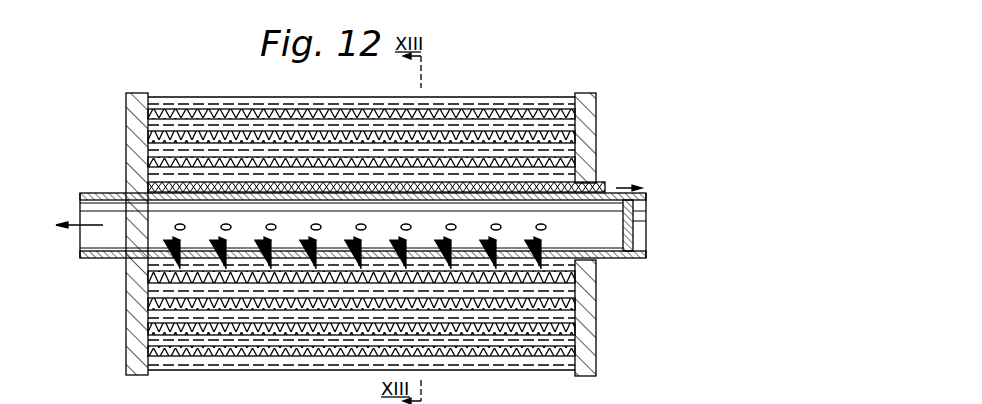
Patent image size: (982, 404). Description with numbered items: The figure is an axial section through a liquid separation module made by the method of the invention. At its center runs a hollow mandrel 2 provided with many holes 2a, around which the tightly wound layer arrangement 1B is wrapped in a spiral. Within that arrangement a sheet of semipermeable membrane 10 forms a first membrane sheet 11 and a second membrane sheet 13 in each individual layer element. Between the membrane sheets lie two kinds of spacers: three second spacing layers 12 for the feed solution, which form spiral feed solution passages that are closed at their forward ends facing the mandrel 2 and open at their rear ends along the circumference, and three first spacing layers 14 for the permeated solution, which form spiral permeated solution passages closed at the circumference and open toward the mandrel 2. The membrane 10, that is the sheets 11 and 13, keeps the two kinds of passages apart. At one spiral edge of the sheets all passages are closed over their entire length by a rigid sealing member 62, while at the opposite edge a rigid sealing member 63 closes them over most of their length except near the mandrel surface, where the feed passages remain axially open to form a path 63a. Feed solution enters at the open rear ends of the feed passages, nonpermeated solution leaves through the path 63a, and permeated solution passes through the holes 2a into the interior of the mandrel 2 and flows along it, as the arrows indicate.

The semipermeable membrane 10 is at (482, 83).
The first membrane sheet 11 is at (365, 96).
The second spacing layer 12 is at (296, 100).
The second membrane sheet 13 is at (243, 96).
The first spacing layer 14 is at (195, 94).
The hollow mandrel 2 is at (88, 250).
The holes 2a is at (539, 220).
The sealing member 62 is at (125, 315).
The sealing member 63 is at (580, 333).
The path 63a is at (596, 178).
The tightly wound layer arrangement 1B is at (172, 362).